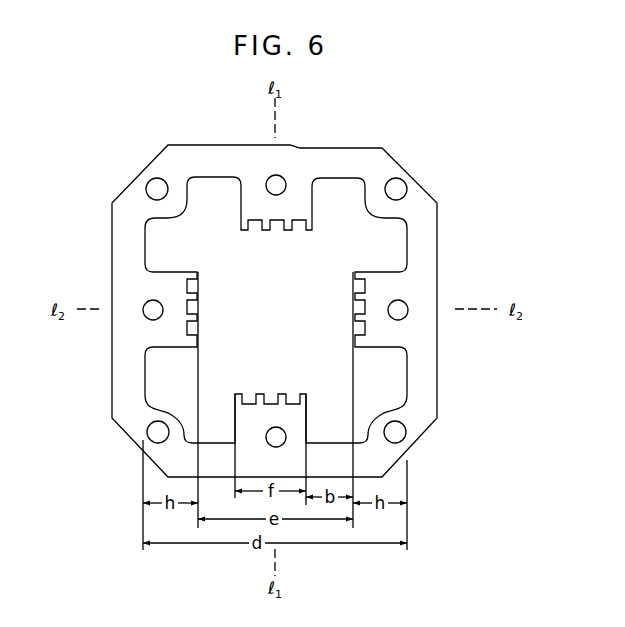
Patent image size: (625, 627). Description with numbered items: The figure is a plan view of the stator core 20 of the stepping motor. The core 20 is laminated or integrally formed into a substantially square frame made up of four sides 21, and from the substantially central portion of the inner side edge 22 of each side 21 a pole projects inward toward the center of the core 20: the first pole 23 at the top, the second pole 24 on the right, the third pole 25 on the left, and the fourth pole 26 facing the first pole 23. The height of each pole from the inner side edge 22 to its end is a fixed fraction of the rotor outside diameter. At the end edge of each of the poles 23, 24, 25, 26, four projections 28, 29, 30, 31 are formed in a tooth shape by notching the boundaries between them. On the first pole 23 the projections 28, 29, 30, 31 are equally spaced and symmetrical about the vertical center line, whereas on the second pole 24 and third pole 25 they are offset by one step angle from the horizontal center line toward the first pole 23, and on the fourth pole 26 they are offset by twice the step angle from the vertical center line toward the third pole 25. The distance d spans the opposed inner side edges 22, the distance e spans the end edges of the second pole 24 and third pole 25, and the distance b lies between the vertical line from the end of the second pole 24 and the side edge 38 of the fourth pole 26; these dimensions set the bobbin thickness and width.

The stator core 20 is at (434, 218).
The side 21 is at (365, 146).
The inner side edge 22 is at (216, 178).
The first pole 23 is at (312, 200).
The second pole 24 is at (383, 272).
The third pole 25 is at (166, 335).
The fourth pole 26 is at (306, 409).
The projection 28 is at (246, 231).
The projection 29 is at (272, 229).
The projection 30 is at (296, 229).
The projection 31 is at (313, 231).
The side edge 38 is at (307, 424).